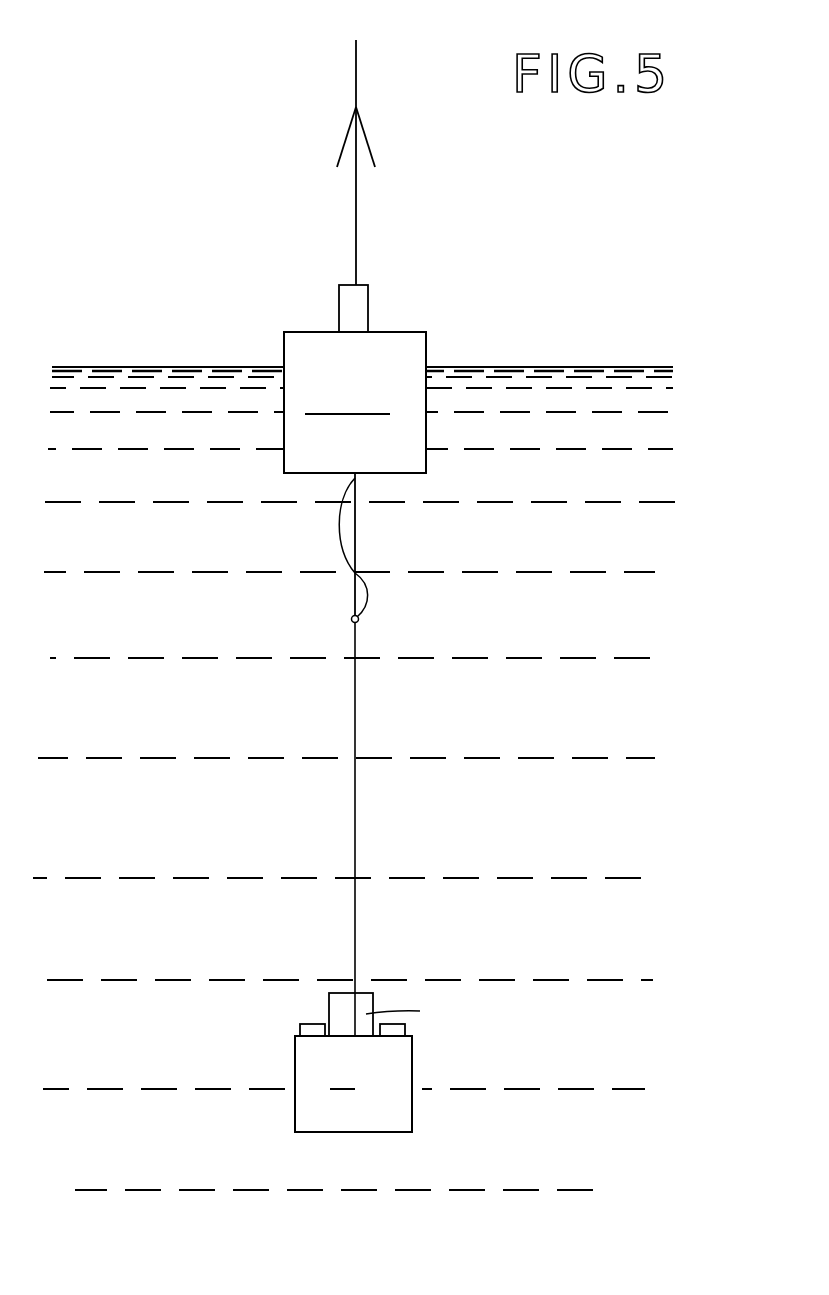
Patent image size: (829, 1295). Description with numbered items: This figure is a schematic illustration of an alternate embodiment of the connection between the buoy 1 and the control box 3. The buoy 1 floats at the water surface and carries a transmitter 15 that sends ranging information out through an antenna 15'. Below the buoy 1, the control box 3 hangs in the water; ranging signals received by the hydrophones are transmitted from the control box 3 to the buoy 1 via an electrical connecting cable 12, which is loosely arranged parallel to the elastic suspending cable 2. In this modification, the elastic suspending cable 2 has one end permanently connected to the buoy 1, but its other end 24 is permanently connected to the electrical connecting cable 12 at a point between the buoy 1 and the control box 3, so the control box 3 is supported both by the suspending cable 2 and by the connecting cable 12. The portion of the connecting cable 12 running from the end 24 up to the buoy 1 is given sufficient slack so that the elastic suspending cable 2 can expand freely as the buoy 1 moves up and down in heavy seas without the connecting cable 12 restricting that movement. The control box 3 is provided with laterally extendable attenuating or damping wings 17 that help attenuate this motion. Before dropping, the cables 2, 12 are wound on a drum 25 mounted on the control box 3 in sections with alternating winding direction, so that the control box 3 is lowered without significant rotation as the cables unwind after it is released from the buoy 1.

The buoy 1 is at (414, 358).
The elastic suspending cable 2 is at (357, 537).
The control box 3 is at (353, 1084).
The electrical connecting cable 12 is at (358, 640).
The transmitter 15 is at (377, 303).
The antenna 15' is at (375, 162).
The attenuating or damping wings 17 is at (310, 1024).
The end of the suspending cable 24 is at (352, 620).
The drum 25 is at (372, 1005).